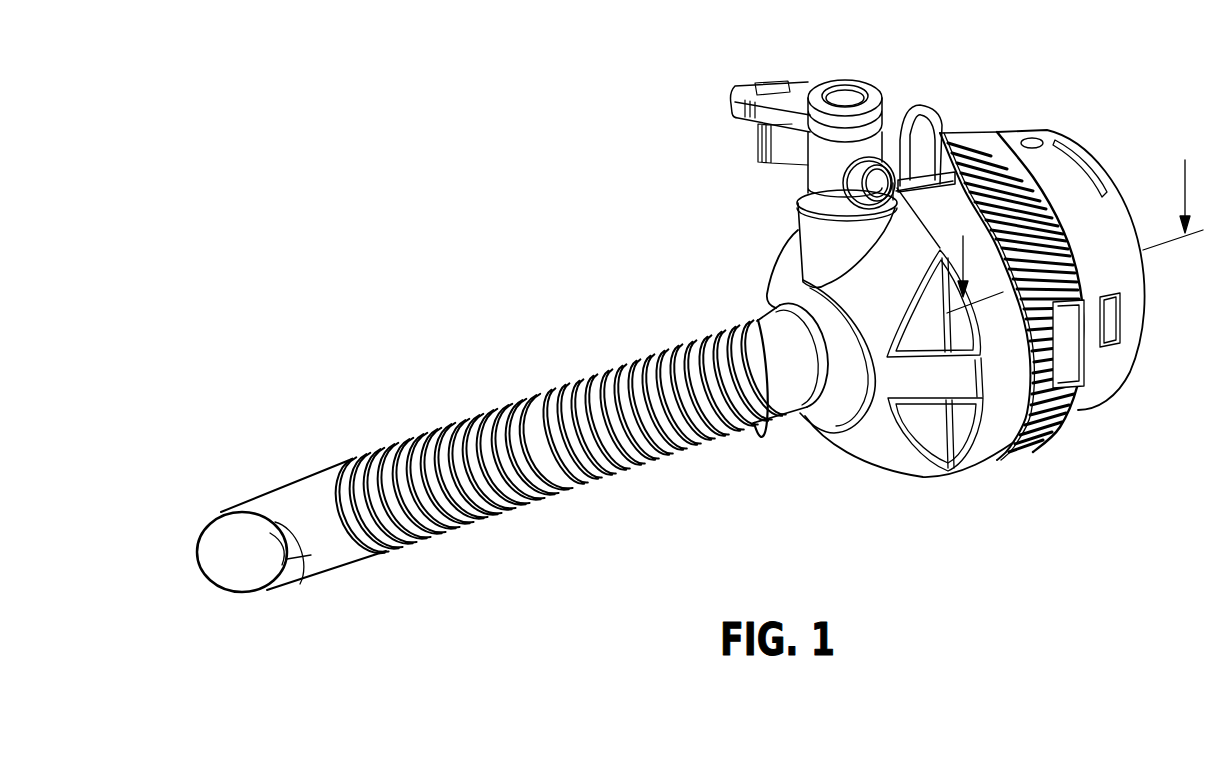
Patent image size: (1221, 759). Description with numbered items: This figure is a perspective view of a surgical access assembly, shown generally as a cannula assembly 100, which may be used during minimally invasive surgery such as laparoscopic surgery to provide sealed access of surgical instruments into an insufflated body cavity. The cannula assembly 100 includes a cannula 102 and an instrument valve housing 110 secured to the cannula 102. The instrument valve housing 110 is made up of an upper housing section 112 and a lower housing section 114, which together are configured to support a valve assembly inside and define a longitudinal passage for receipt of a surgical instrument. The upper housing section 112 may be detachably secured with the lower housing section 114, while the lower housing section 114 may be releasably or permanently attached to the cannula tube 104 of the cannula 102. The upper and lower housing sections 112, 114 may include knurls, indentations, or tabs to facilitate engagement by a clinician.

The cannula assembly 100 is at (1018, 78).
The cannula 102 is at (335, 555).
The cannula tube 104 is at (752, 332).
The instrument valve housing 110 is at (1095, 413).
The upper housing section 112 is at (1135, 357).
The lower housing section 114 is at (1033, 443).